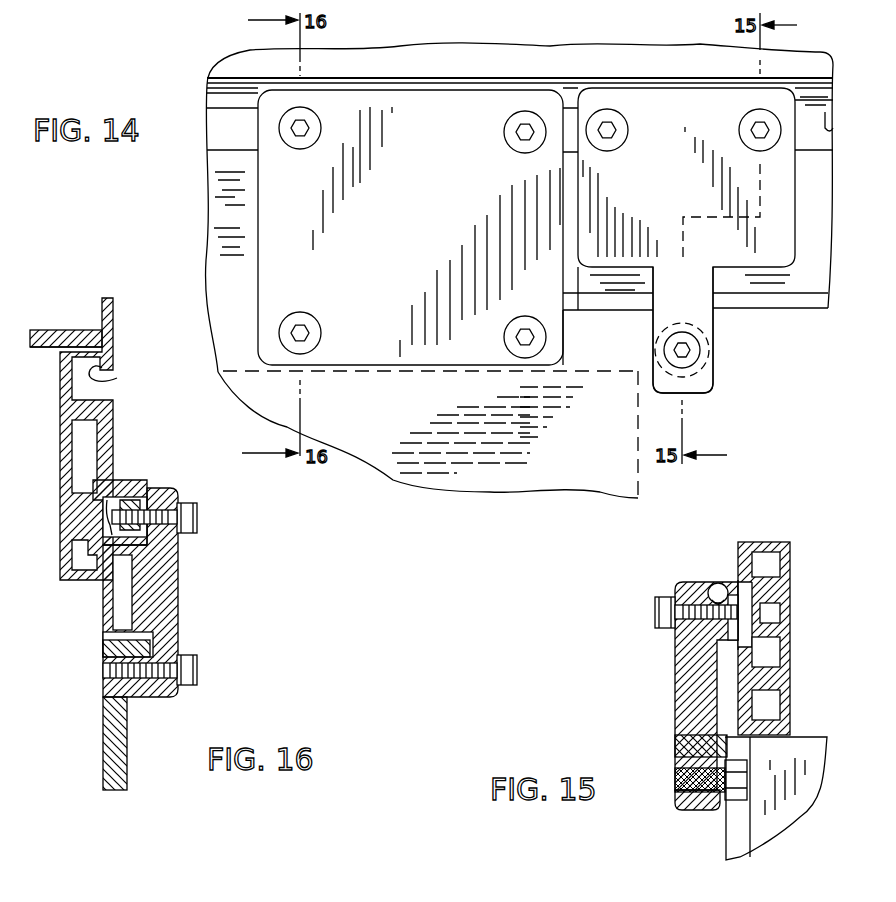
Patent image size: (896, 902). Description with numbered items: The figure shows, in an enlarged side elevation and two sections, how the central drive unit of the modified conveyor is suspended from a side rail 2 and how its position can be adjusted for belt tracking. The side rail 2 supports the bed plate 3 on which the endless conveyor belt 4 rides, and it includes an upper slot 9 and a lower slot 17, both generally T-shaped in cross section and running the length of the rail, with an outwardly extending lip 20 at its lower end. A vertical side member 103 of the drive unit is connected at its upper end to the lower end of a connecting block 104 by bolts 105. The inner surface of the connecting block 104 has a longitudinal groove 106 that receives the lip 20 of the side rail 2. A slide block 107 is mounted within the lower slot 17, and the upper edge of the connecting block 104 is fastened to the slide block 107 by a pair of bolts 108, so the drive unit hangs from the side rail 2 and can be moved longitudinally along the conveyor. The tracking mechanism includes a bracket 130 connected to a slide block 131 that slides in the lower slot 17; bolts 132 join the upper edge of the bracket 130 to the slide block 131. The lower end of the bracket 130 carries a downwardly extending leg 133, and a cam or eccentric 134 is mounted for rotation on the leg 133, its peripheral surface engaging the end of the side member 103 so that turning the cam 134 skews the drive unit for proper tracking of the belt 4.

In FIG. 14, the side rail 2 is at (826, 52).
In FIG. 16, the side rail 2 is at (118, 350).
In FIG. 15, the side rail 2 is at (755, 710).
In FIG. 16, the bed plate 3 is at (35, 348).
In FIG. 16, the conveyor belt 4 is at (70, 328).
In FIG. 16, the upper slot 9 is at (112, 377).
In FIG. 14, the lower slot 17 is at (833, 129).
In FIG. 16, the lower slot 17 is at (115, 490).
In FIG. 15, the lower slot 17 is at (726, 585).
In FIG. 14, the lip 20 is at (802, 303).
In FIG. 16, the lip 20 is at (157, 645).
In FIG. 15, the lip 20 is at (705, 743).
In FIG. 14, the side member 103 is at (512, 488).
In FIG. 16, the side member 103 is at (118, 750).
In FIG. 15, the side member 103 is at (738, 850).
In FIG. 14, the connecting block 104 is at (420, 213).
In FIG. 16, the connecting block 104 is at (168, 596).
In FIG. 14, the bolt 105 is at (520, 333).
In FIG. 16, the bolt 105 is at (197, 671).
In FIG. 16, the longitudinal groove 106 is at (153, 643).
In FIG. 16, the slide block 107 is at (135, 532).
In FIG. 14, the bolt 108 is at (522, 132).
In FIG. 16, the bolt 108 is at (200, 508).
In FIG. 14, the bracket 130 is at (683, 188).
In FIG. 15, the bracket 130 is at (683, 660).
In FIG. 15, the slide block 131 is at (726, 588).
In FIG. 14, the bolt 132 is at (612, 132).
In FIG. 15, the bolt 132 is at (662, 614).
In FIG. 14, the leg 133 is at (704, 385).
In FIG. 15, the leg 133 is at (700, 812).
In FIG. 14, the cam 134 is at (663, 350).
In FIG. 15, the cam 134 is at (738, 772).